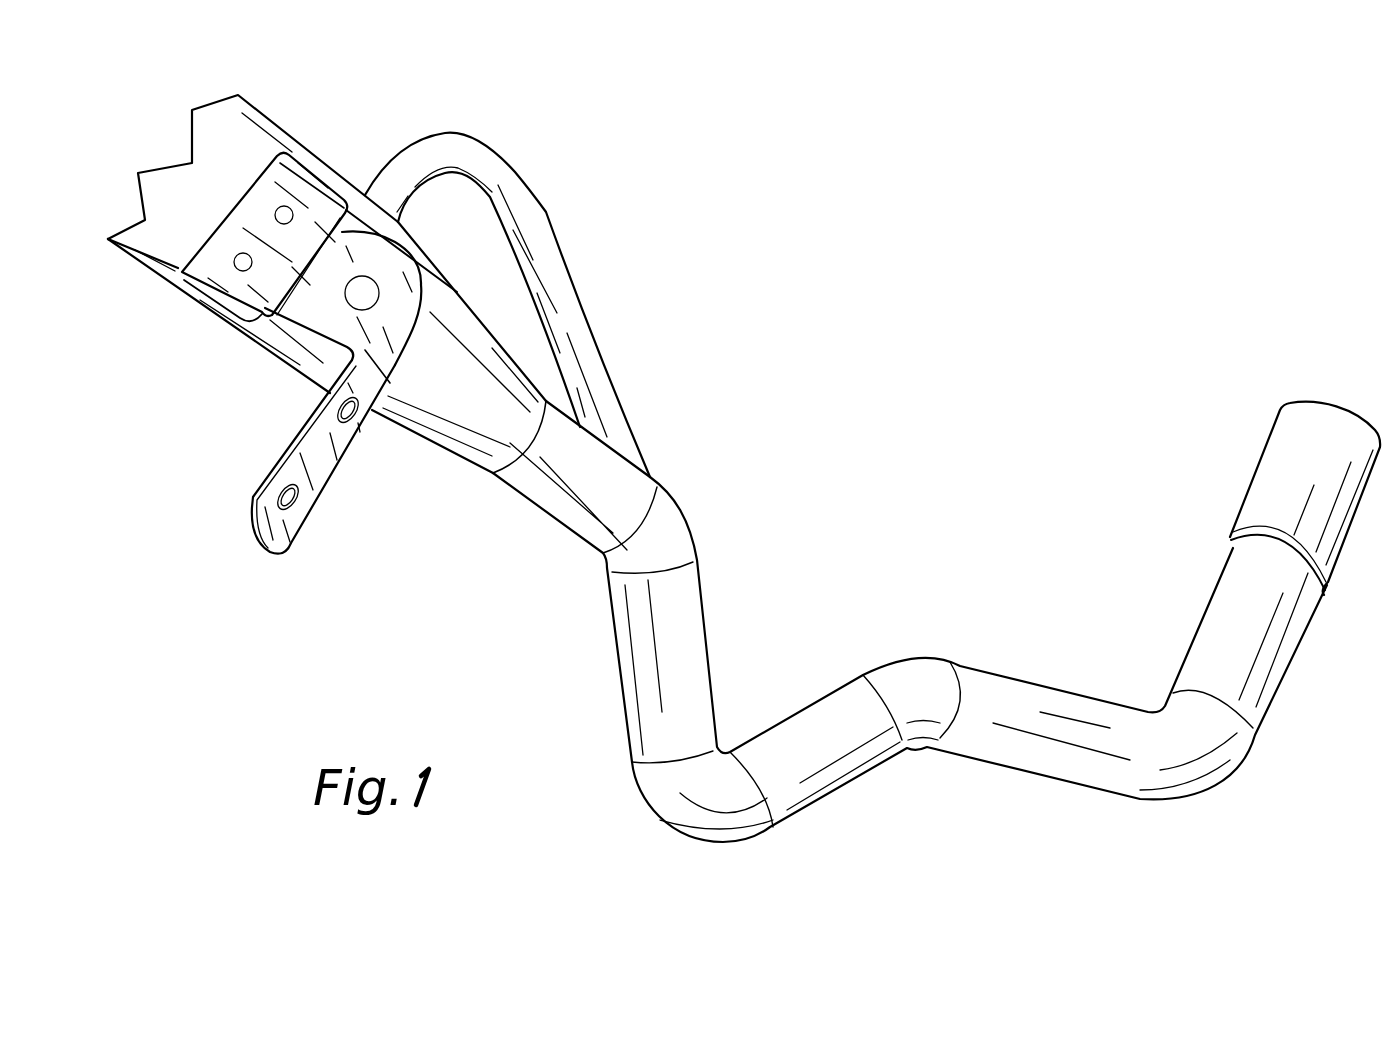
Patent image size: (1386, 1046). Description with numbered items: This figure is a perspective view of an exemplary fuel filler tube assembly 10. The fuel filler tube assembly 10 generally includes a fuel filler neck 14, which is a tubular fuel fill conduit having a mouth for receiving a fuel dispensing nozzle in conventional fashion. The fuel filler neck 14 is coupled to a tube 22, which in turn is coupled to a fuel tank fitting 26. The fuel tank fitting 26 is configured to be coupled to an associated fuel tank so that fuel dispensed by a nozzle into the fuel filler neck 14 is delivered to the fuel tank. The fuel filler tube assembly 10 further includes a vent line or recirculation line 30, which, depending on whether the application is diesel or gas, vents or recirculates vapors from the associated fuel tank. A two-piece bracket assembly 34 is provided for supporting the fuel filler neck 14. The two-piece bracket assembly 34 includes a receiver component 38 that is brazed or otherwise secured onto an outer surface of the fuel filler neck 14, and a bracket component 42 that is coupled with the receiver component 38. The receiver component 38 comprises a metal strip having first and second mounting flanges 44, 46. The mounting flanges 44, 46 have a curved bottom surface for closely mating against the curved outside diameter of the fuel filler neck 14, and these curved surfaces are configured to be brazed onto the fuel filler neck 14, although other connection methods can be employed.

The fuel filler tube assembly 10 is at (945, 275).
The fuel filler neck 14 is at (220, 318).
The tube 22 is at (698, 668).
The fuel tank fitting 26 is at (1263, 468).
The vent line or recirculation line 30 is at (576, 310).
The two-piece bracket assembly 34 is at (260, 416).
The receiver component 38 is at (293, 165).
The bracket component 42 is at (326, 474).
The first mounting flange 44 is at (323, 188).
The second mounting flange 46 is at (208, 288).